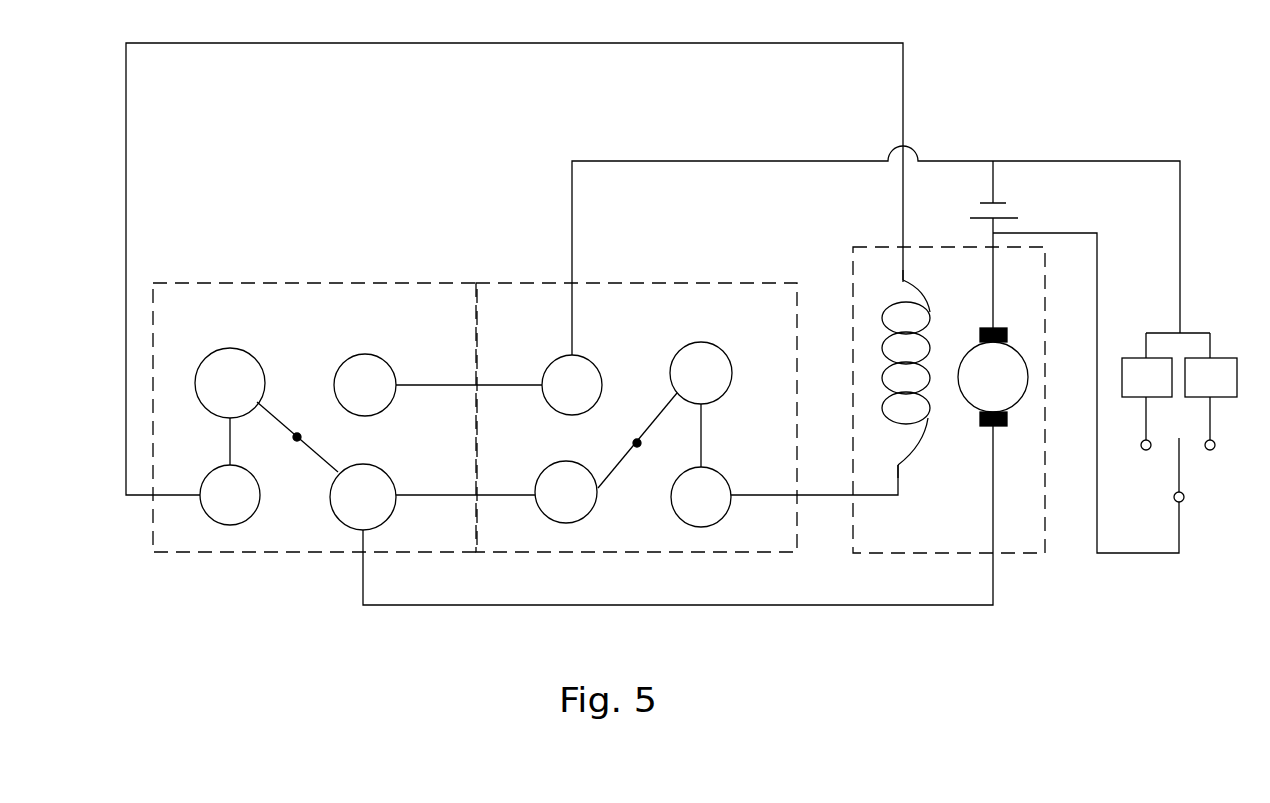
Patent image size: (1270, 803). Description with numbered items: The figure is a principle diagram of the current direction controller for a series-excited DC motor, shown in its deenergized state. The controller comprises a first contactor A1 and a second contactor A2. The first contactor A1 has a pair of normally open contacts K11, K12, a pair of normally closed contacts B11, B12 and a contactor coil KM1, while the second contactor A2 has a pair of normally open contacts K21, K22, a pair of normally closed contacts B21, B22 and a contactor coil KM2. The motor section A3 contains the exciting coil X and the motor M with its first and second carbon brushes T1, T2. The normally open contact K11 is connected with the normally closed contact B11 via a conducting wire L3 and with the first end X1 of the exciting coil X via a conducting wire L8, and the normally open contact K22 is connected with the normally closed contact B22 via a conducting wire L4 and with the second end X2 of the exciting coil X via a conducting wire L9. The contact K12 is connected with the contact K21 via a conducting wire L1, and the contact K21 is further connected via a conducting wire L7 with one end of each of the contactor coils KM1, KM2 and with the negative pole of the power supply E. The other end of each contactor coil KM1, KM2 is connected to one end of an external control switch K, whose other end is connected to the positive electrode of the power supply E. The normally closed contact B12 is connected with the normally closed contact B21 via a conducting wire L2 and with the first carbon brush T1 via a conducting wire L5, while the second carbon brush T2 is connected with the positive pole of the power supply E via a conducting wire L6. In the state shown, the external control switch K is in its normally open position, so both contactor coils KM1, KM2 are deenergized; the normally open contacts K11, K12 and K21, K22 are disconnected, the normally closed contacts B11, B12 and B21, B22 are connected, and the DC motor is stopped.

The first contactor A1 is at (336, 282).
The second contactor A2 is at (648, 282).
The motor and inductor module A3 is at (870, 247).
The conducting wire L1 is at (469, 370).
The conducting wire L2 is at (465, 478).
The conducting wire L3 is at (212, 441).
The conducting wire L4 is at (722, 435).
The conducting wire L5 is at (678, 515).
The conducting wire L6 is at (1068, 385).
The conducting wire L7 is at (876, 243).
The conducting wire L8 is at (514, 252).
The conducting wire L9 is at (814, 478).
The normally closed contact B11 is at (230, 383).
The normally closed contact B12 is at (363, 497).
The normally closed contact B21 is at (566, 492).
The normally closed contact B22 is at (701, 373).
The normally open contact K11 is at (230, 495).
The normally open contact K12 is at (365, 385).
The normally open contact K21 is at (572, 385).
The normally open contact K22 is at (701, 497).
The exciting coil X is at (894, 372).
The first end of the exciting coil X1 is at (884, 285).
The second end of the exciting coil X2 is at (877, 473).
The motor M is at (993, 377).
The first carbon brush T1 is at (981, 441).
The second carbon brush T2 is at (980, 320).
The power supply E is at (1007, 193).
The contactor coil KM1 is at (1147, 404).
The contactor coil KM2 is at (1211, 404).
The external control switch K is at (1164, 472).